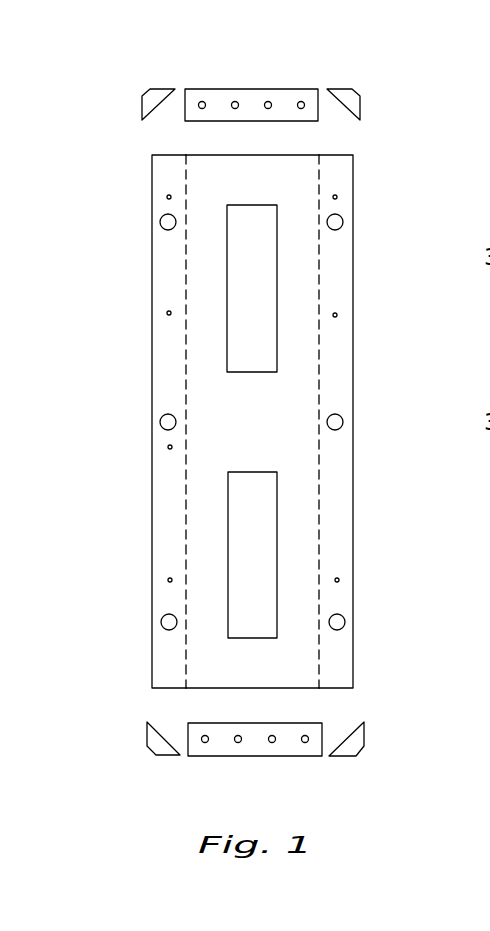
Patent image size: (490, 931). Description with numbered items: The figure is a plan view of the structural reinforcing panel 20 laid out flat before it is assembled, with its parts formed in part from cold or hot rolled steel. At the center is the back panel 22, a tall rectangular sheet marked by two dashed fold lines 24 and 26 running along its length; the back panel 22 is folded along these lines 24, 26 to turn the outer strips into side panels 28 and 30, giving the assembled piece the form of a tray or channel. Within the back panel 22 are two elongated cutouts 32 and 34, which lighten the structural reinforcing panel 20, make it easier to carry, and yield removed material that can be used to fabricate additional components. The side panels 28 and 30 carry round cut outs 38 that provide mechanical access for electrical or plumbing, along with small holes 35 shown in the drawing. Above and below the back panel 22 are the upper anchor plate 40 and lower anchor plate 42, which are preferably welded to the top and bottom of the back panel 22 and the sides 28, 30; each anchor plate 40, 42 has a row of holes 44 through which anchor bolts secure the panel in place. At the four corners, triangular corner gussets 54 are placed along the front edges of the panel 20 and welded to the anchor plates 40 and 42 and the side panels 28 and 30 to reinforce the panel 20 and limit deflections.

The structural reinforcing panel 20 is at (393, 68).
The back panel 22 is at (218, 157).
The fold line 24 is at (319, 354).
The fold line 26 is at (186, 510).
The side panel 28 is at (347, 167).
The side panel 30 is at (163, 558).
The cutout 32 is at (253, 372).
The cutout 34 is at (237, 471).
The small holes 35 is at (166, 196).
The cut outs 38 is at (343, 221).
The upper anchor plate 40 is at (262, 89).
The lower anchor plate 42 is at (255, 757).
The holes 44 is at (268, 109).
The corner gussets 54 is at (153, 89).